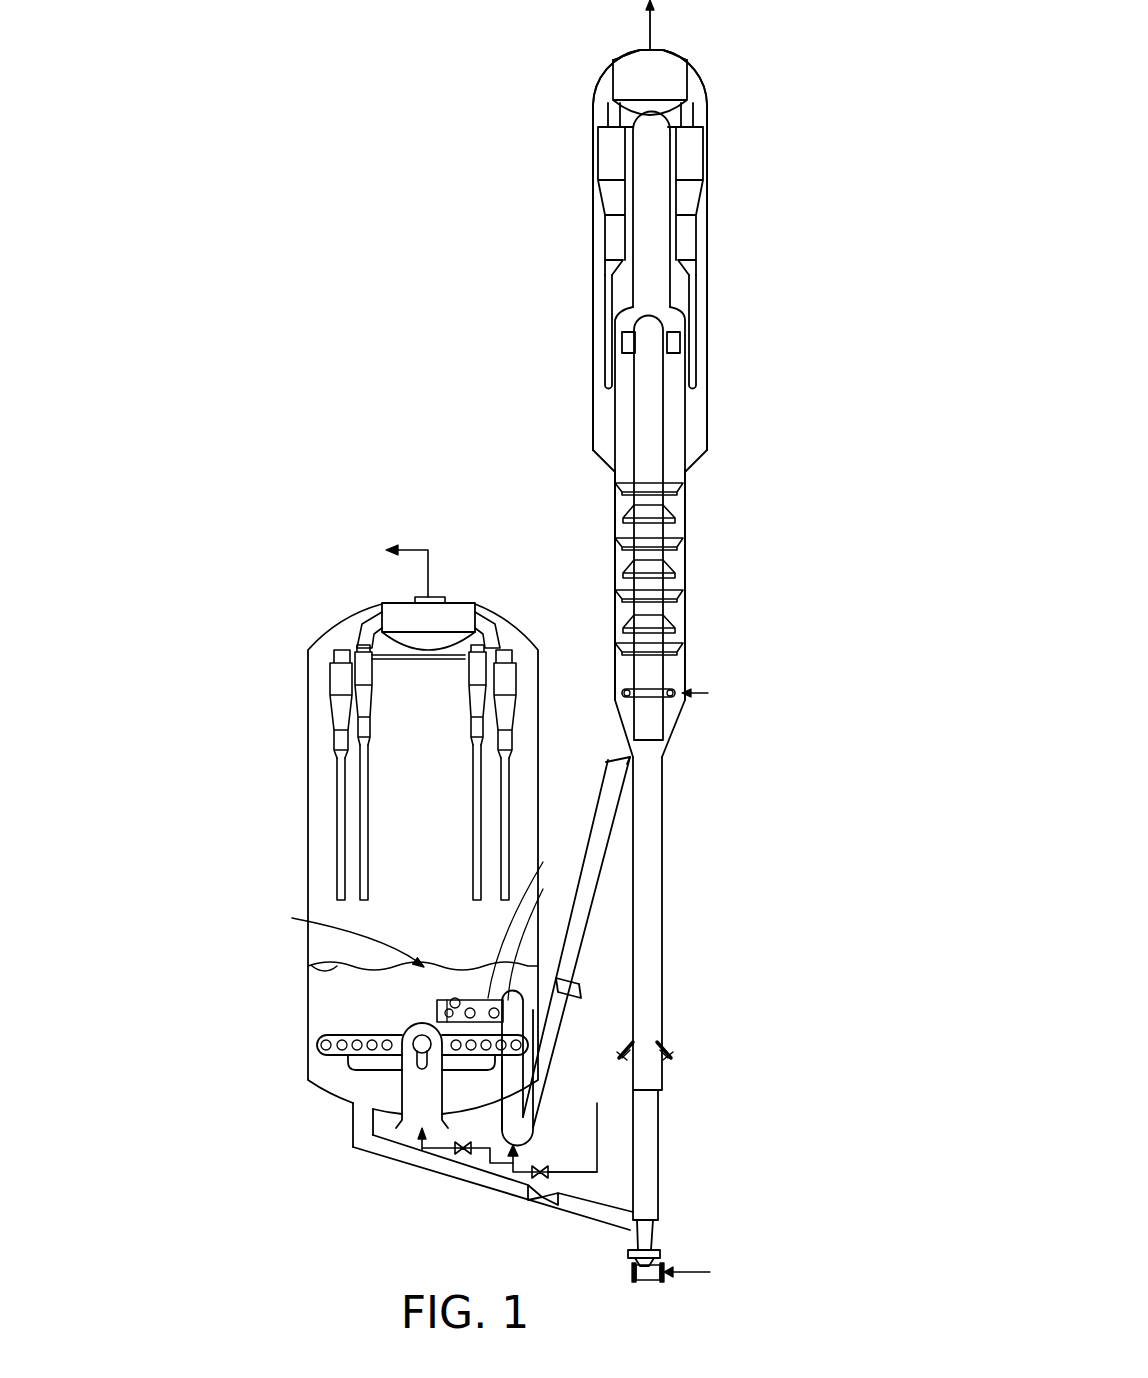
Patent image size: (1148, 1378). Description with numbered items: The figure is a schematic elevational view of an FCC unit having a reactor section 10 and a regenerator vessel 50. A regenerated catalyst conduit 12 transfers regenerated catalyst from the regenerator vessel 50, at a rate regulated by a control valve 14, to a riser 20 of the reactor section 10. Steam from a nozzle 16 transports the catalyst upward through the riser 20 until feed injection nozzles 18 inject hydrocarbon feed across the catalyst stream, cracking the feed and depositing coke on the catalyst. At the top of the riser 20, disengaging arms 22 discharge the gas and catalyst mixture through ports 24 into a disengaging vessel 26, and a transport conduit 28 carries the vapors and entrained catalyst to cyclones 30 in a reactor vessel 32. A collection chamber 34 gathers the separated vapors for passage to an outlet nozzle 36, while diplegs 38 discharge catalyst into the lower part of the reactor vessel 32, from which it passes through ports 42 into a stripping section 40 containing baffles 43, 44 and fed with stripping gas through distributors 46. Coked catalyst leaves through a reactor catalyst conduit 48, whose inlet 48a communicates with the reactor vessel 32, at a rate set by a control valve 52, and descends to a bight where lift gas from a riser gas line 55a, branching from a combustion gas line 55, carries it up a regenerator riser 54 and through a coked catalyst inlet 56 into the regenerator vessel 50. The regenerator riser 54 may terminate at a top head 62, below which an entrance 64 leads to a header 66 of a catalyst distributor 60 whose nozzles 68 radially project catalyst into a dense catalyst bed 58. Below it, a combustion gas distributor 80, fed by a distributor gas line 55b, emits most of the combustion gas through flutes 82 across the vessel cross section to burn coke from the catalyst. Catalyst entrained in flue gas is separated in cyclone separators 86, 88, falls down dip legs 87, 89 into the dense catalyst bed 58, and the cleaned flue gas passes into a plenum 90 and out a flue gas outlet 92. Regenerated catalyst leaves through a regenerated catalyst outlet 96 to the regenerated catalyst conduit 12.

The reactor section 10 is at (808, 502).
The regenerated catalyst conduit 12 is at (460, 1195).
The control valve 14 is at (542, 1198).
The nozzle 16 is at (642, 1276).
The feed injection nozzles 18 is at (624, 1043).
The riser 20 is at (651, 943).
The disengaging arms 22 is at (668, 332).
The ports 24 is at (677, 348).
The disengaging vessel 26 is at (677, 410).
The transport conduit 28 is at (655, 200).
The cyclones 30 is at (614, 147).
The reactor vessel 32 is at (705, 270).
The collection chamber 34 is at (672, 76).
The outlet nozzle 36 is at (637, 52).
The diplegs 38 is at (606, 338).
The stripping section 40 is at (676, 561).
The ports 42 is at (605, 472).
The baffles 43 is at (670, 596).
The baffles 44 is at (666, 568).
The distributors 46 is at (670, 689).
The reactor catalyst conduit 48 is at (607, 846).
The inlet 48a is at (612, 762).
The regenerator vessel 50 is at (238, 751).
The control valve 52 is at (568, 996).
The regenerator riser 54 is at (512, 1123).
The combustion gas line 55 is at (597, 1140).
The riser gas line 55a is at (568, 1174).
The distributor gas line 55b is at (548, 1166).
The coked catalyst inlet 56 is at (515, 1080).
The dense catalyst bed 58 is at (312, 963).
The catalyst distributor 60 is at (340, 936).
The top head 62 is at (540, 935).
The entrance 64 is at (522, 1006).
The header 66 is at (530, 920).
The nozzles 68 is at (448, 1006).
The combustion gas distributor 80 is at (412, 1066).
The flutes 82 is at (328, 1044).
The cyclone separators 86 is at (338, 706).
The dip legs 87 is at (336, 800).
The cyclone separators 88 is at (362, 673).
The dip legs 89 is at (361, 835).
The plenum 90 is at (390, 603).
The flue gas outlet 92 is at (441, 598).
The regenerated catalyst outlet 96 is at (372, 1108).